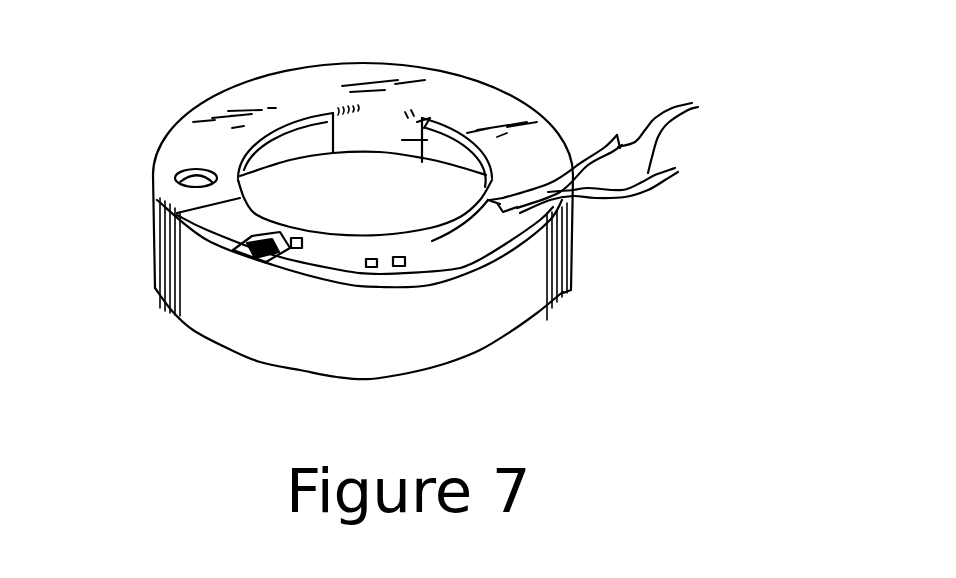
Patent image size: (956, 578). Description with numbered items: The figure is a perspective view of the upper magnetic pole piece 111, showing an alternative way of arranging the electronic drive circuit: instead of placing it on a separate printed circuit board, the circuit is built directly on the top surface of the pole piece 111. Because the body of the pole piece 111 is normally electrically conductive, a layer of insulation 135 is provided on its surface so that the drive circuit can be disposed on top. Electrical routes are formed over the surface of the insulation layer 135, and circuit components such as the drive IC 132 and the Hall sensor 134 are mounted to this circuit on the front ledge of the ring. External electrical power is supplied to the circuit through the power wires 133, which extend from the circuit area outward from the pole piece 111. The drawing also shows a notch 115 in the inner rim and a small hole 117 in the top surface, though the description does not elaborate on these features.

The upper magnetic pole piece 111 is at (574, 233).
The notch 115 is at (447, 135).
The hole 117 is at (184, 170).
The drive IC 132 is at (241, 243).
The power wires 133 is at (692, 103).
The Hall sensor 134 is at (300, 244).
The insulation layer 135 is at (470, 248).